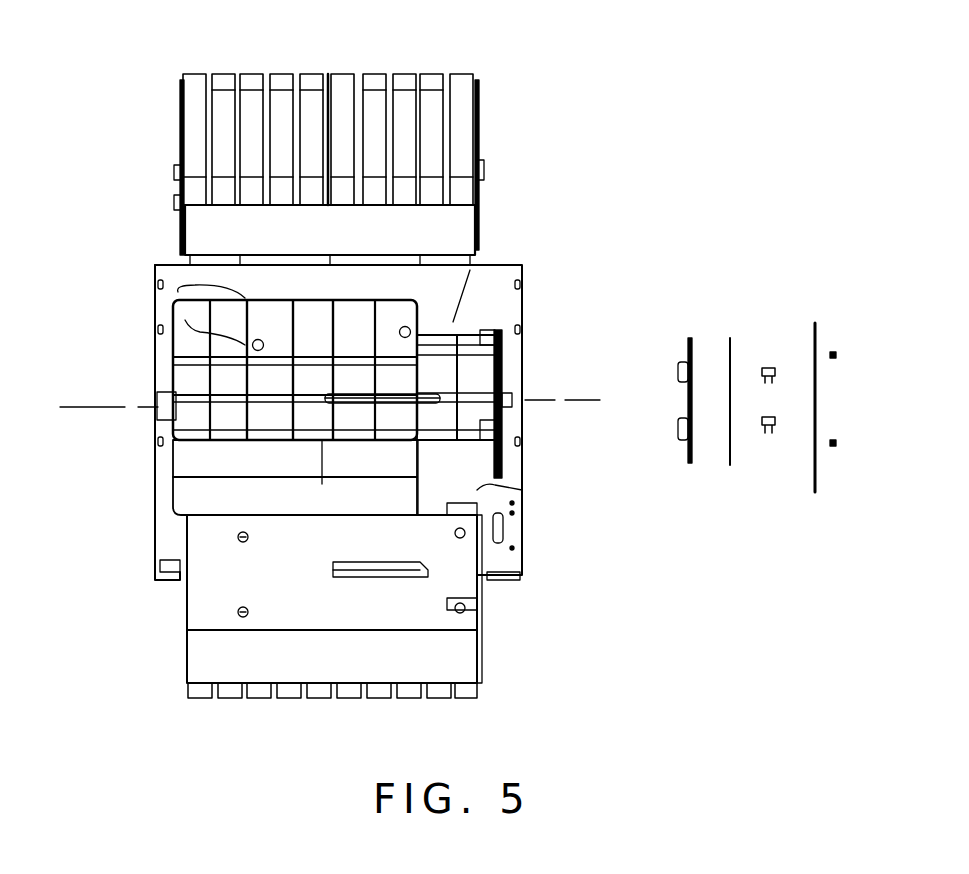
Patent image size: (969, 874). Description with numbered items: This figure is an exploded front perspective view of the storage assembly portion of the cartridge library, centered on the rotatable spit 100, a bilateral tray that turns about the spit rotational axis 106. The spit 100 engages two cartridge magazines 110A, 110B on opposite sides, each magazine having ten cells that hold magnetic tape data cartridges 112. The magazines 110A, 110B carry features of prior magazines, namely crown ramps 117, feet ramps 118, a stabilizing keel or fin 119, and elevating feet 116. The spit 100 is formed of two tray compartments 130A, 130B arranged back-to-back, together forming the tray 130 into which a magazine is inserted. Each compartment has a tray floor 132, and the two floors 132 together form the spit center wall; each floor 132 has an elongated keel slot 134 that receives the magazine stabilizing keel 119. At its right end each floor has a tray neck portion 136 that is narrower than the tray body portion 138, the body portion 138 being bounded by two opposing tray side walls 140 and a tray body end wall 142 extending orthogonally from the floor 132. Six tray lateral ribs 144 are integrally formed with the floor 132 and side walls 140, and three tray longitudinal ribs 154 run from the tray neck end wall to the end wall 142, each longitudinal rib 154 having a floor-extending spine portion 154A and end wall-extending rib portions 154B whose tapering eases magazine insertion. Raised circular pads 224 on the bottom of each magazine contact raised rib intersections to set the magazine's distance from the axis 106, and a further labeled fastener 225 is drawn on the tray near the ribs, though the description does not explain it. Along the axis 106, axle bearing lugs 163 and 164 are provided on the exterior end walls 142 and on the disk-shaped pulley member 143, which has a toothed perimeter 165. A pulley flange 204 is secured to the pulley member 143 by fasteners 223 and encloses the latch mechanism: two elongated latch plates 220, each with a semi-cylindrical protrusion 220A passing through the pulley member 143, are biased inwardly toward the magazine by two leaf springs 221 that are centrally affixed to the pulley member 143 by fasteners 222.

The rotatable spit 100 is at (700, 215).
The spit rotational axis 106 is at (80, 400).
The cartridge magazine 110A is at (460, 245).
The cartridge magazine 110B is at (215, 665).
The magnetic tape data cartridge 112 is at (195, 75).
The elevating feet 116 is at (185, 615).
The crown ramps 117 is at (483, 173).
The feet ramps 118 is at (176, 165).
The stabilizing keel 119 is at (480, 570).
The tray 130 is at (118, 430).
The tray compartment 130A is at (200, 468).
The tray compartment 130B is at (205, 505).
The tray floor 132 is at (175, 300).
The elongated slot 134 is at (522, 320).
The tray neck portion 136 is at (453, 322).
The tray body portion 138 is at (300, 335).
The tray side walls 140 is at (365, 300).
The tray body end wall 142 is at (263, 378).
The pulley member 143 is at (495, 335).
The tray lateral ribs 144 is at (268, 330).
The tray longitudinal ribs 154 is at (335, 340).
The floor-extending spine portion 154A is at (372, 440).
The end wall-extending rib portions 154B is at (217, 440).
The axle bearing lug 163 is at (505, 365).
The axle bearing lug 164 is at (158, 400).
The toothed perimeter 165 is at (500, 290).
The pulley flange 204 is at (817, 495).
The latch plates 220 is at (693, 335).
The semi-cylindrical protrusion 220A is at (680, 425).
The leaf springs 221 is at (733, 335).
The fasteners 222 is at (777, 355).
The fasteners 223 is at (840, 440).
The raised circular pads 224 is at (243, 537).
The fastener 225 is at (257, 345).